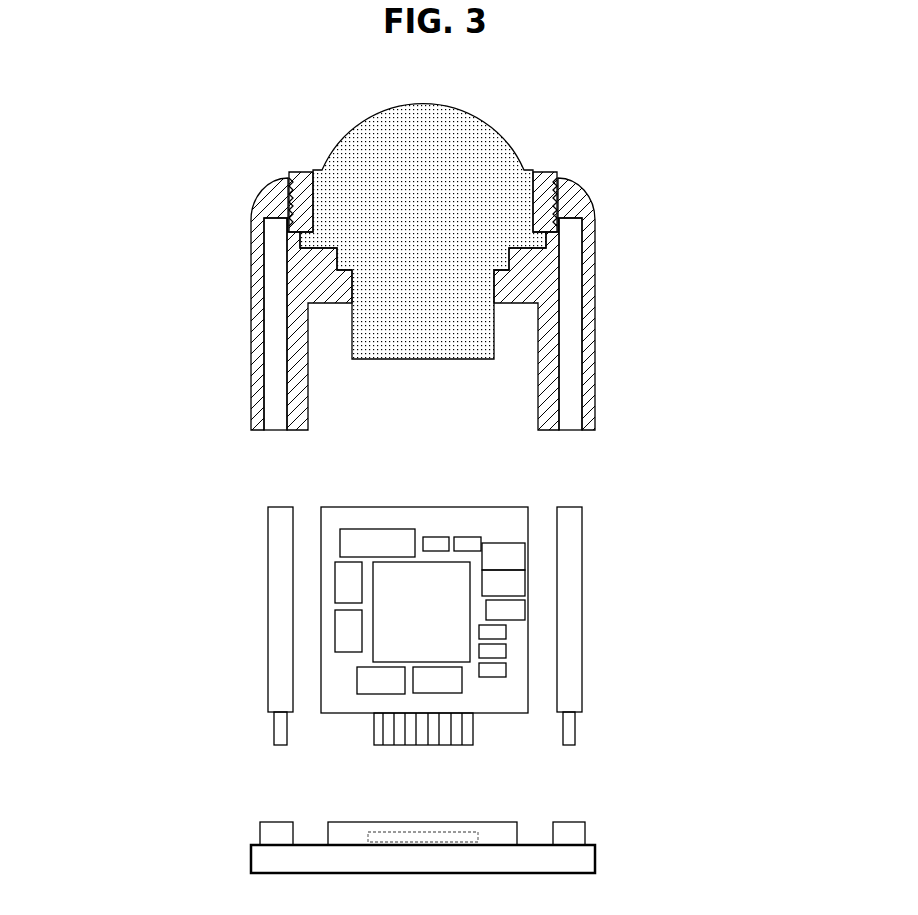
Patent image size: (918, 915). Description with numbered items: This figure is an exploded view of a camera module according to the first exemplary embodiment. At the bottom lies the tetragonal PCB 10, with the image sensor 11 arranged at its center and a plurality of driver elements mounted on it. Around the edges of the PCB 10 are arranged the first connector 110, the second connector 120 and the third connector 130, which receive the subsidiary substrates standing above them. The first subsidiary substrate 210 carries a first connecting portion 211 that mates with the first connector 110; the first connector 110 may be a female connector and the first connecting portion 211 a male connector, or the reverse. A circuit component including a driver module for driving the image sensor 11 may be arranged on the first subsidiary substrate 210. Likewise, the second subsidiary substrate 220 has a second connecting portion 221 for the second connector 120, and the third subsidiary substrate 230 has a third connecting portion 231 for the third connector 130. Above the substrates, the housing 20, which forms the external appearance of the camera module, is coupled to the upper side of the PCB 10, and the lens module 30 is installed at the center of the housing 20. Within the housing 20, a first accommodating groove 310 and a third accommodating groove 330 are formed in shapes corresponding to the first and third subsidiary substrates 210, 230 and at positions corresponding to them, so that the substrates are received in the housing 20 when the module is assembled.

The PCB 10 is at (597, 856).
The image sensor 11 is at (455, 830).
The housing 20 is at (583, 198).
The lens module 30 is at (498, 142).
The first connector 110 is at (262, 826).
The second connector 120 is at (350, 822).
The third connector 130 is at (583, 822).
The first subsidiary substrate 210 is at (275, 543).
The first connecting portion 211 is at (280, 735).
The second subsidiary substrate 220 is at (475, 512).
The second connecting portion 221 is at (473, 737).
The third subsidiary substrate 230 is at (580, 517).
The third connecting portion 231 is at (578, 735).
The first accommodating groove 310 is at (268, 343).
The third accommodating groove 330 is at (578, 345).